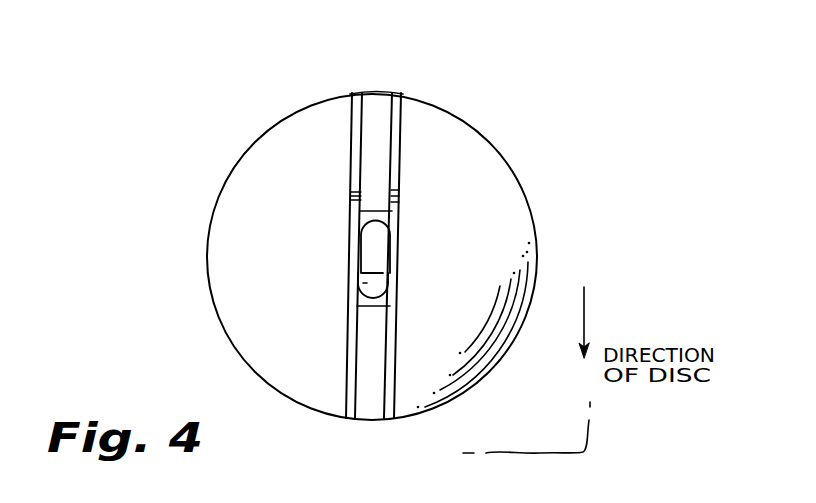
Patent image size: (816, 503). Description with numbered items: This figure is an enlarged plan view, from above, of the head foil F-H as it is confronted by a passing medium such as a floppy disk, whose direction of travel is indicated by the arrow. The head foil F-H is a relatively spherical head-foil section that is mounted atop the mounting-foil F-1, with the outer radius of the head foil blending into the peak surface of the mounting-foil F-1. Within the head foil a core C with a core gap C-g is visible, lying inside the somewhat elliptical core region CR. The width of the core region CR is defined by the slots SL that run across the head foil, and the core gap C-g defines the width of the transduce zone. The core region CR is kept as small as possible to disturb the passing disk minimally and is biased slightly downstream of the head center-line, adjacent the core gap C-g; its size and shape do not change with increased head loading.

The head foil F-H is at (513, 165).
The slots SL is at (357, 93).
The core C is at (388, 216).
The core gap C-g is at (388, 273).
The core region CR is at (367, 282).
The mounting-foil F-1 is at (560, 433).